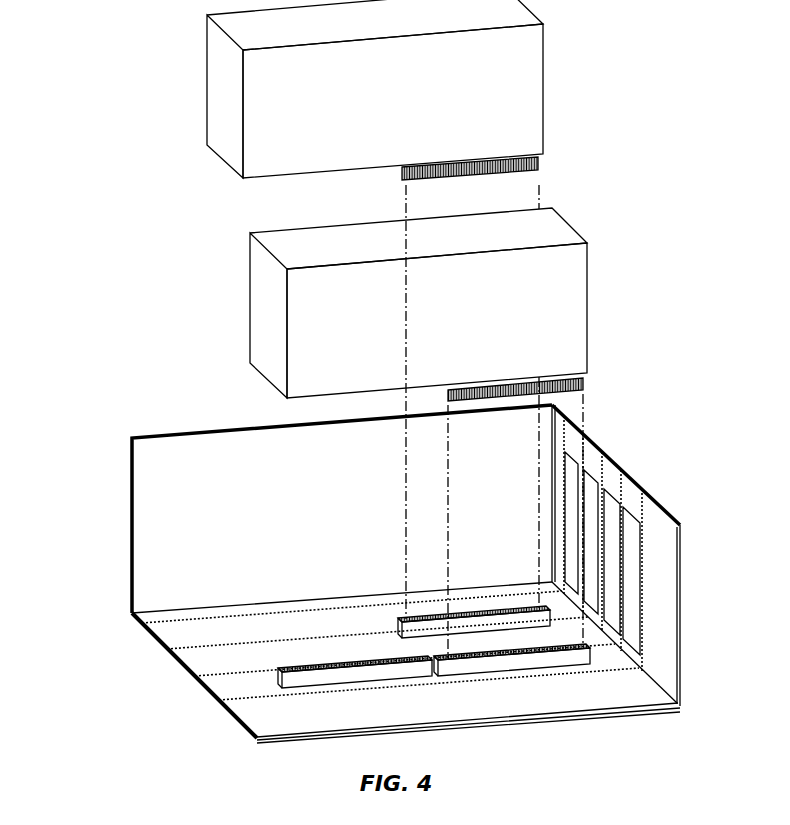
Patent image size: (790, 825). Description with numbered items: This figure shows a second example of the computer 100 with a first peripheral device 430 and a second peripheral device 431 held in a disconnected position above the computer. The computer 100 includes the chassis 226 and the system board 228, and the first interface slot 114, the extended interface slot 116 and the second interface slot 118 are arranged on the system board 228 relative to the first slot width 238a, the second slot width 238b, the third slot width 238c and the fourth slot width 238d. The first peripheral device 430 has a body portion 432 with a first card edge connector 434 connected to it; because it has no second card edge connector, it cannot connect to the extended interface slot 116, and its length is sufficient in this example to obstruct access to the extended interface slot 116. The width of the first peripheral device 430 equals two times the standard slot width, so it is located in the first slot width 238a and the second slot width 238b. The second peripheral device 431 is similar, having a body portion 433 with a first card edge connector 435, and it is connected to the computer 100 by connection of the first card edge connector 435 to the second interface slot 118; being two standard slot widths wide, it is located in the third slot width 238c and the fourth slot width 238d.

The computer 100 is at (78, 393).
The first interface slot 114 is at (567, 662).
The extended interface slot 116 is at (393, 678).
The second interface slot 118 is at (508, 612).
The chassis 226 is at (181, 437).
The system board 228 is at (250, 727).
The first slot width 238a is at (241, 689).
The second slot width 238b is at (220, 669).
The third slot width 238c is at (201, 651).
The fourth slot width 238d is at (181, 633).
The first peripheral device 430 is at (230, 306).
The second peripheral device 431 is at (193, 103).
The body portion 432 is at (587, 300).
The body portion 433 is at (543, 64).
The first card edge connector 434 is at (489, 403).
The first card edge connector 435 is at (474, 158).